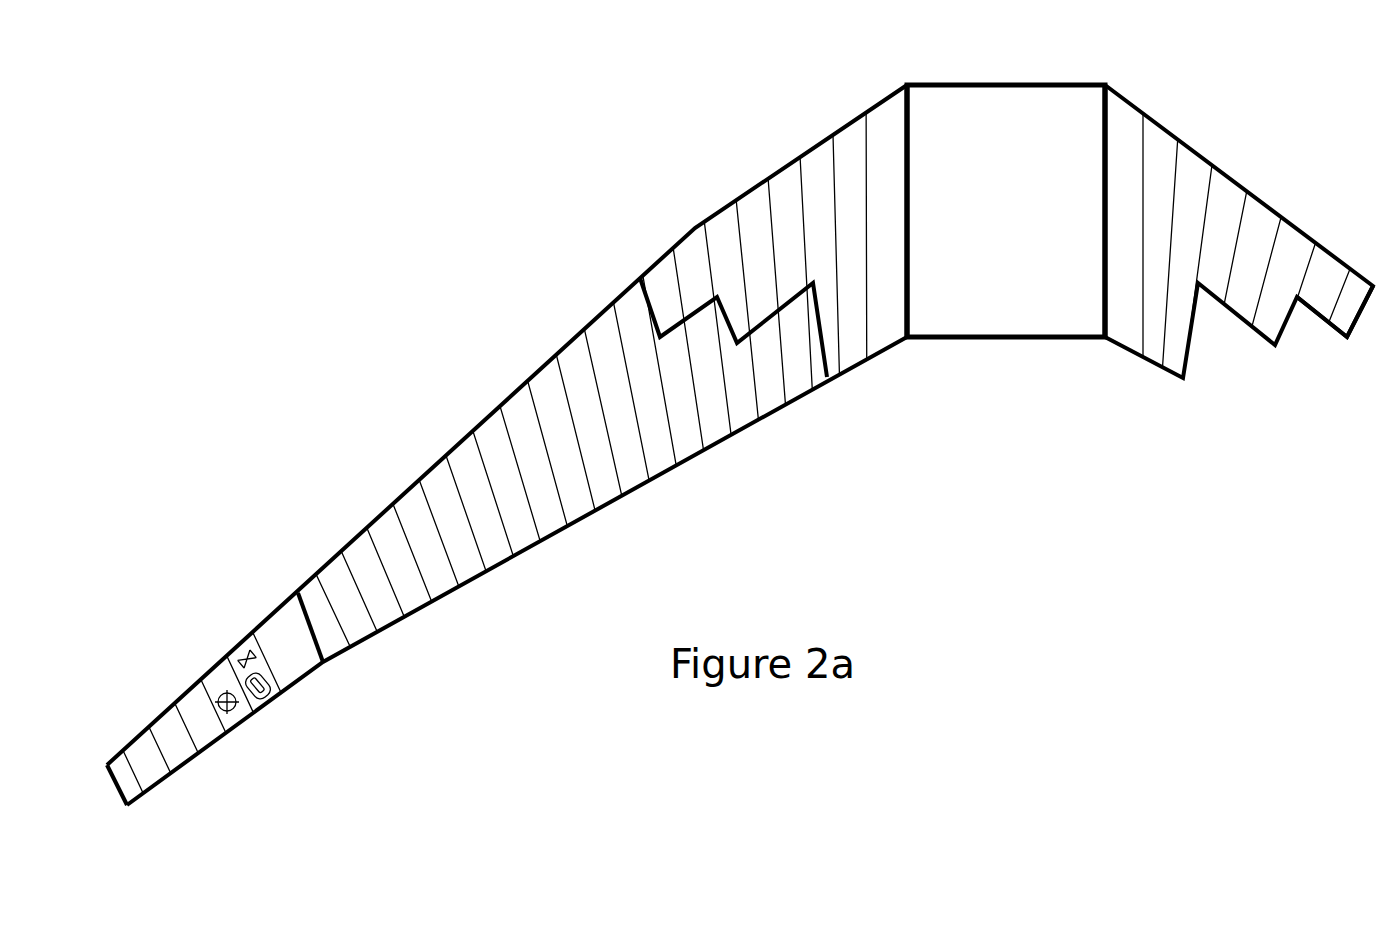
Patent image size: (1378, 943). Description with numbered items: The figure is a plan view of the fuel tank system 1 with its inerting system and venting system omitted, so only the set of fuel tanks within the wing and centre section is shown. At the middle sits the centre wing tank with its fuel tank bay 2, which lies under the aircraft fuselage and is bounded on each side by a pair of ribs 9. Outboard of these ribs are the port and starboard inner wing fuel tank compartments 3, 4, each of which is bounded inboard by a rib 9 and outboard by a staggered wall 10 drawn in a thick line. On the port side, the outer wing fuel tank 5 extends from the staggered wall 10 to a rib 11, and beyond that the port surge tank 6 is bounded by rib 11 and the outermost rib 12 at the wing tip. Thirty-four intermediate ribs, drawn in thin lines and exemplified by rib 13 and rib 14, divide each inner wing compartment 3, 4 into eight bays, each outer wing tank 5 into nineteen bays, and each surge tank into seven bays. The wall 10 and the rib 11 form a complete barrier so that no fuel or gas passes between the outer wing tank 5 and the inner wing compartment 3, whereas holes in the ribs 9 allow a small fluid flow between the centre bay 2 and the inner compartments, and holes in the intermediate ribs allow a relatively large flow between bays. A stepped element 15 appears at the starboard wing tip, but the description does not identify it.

The fuel tank system 1 is at (557, 208).
The fuel tank bay 2 is at (1006, 211).
The port inner wing fuel tank compartment 3 is at (895, 372).
The starboard inner wing fuel tank compartment 4 is at (1155, 398).
The port outer wing fuel tank 5 is at (472, 387).
The port surge tank 6 is at (198, 650).
The rib 9 is at (912, 187).
The staggered wall 10 is at (823, 330).
The rib 11 is at (317, 638).
The outermost rib 12 is at (117, 783).
The rib 13 is at (865, 292).
The rib 14 is at (833, 170).
The stepped wing tip joint 15 is at (1345, 326).